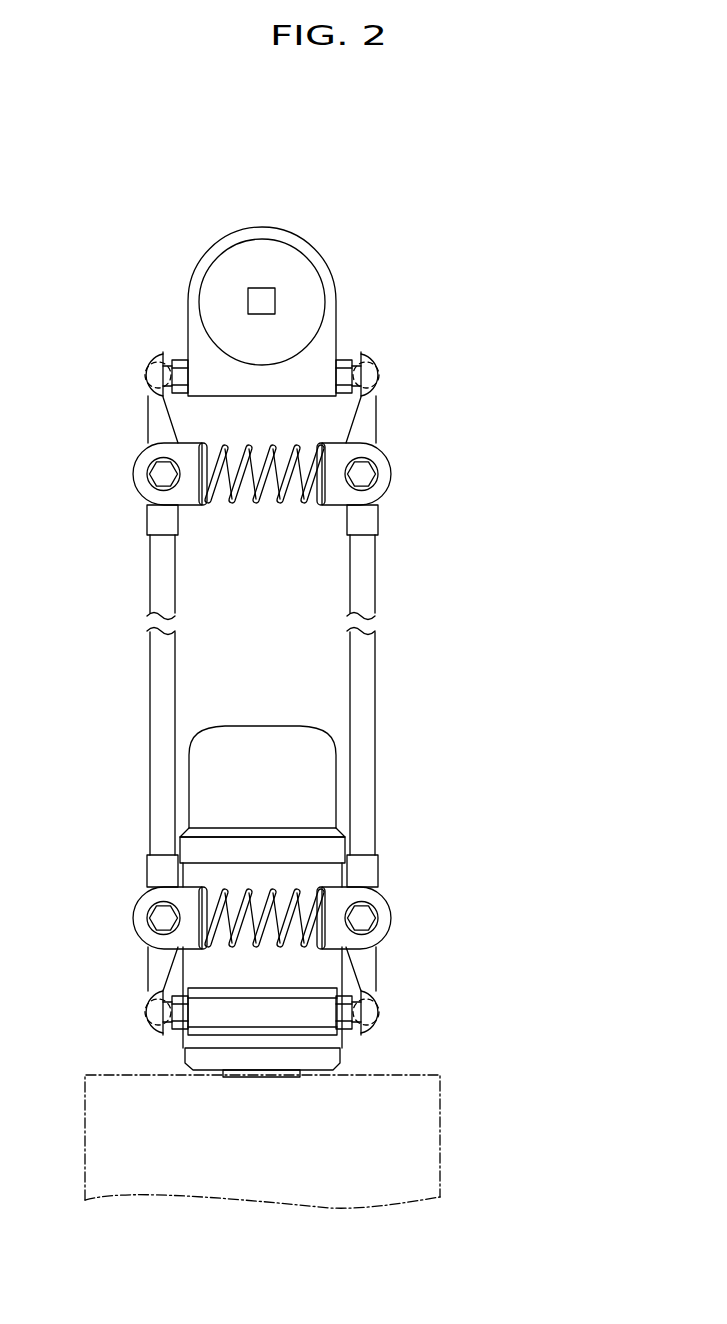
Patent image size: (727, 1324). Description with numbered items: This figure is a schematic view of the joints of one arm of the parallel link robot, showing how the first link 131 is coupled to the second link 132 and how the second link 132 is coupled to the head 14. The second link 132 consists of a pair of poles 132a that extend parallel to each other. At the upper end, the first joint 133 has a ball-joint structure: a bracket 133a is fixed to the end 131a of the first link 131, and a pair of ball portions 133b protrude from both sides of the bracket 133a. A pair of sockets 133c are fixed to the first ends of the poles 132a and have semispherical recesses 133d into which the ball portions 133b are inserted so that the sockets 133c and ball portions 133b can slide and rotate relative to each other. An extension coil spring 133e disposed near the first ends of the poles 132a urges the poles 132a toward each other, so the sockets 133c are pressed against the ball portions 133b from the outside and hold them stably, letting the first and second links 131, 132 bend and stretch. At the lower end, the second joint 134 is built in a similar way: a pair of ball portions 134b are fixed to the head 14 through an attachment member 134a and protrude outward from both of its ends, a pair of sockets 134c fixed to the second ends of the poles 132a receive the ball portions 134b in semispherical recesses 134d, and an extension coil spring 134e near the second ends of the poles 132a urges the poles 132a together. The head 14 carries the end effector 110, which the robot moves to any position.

The head 14 is at (272, 733).
The end effector 110 is at (440, 1127).
The first link 131 is at (316, 227).
The end of the first link 131a is at (290, 250).
The second link 132 is at (474, 598).
The poles 132a is at (363, 590).
The first joint 133 is at (506, 315).
The bracket 133a is at (325, 268).
The ball portions 133b is at (162, 352).
The sockets 133c is at (137, 378).
The semispherical recesses 133d is at (147, 358).
The extension coil spring 133e is at (273, 506).
The second joint 134 is at (507, 965).
The attachment member 134a is at (302, 1017).
The ball portions 134b is at (167, 990).
The sockets 134c is at (137, 1018).
The semispherical recesses 134d is at (147, 1007).
The extension coil spring 134e is at (295, 887).